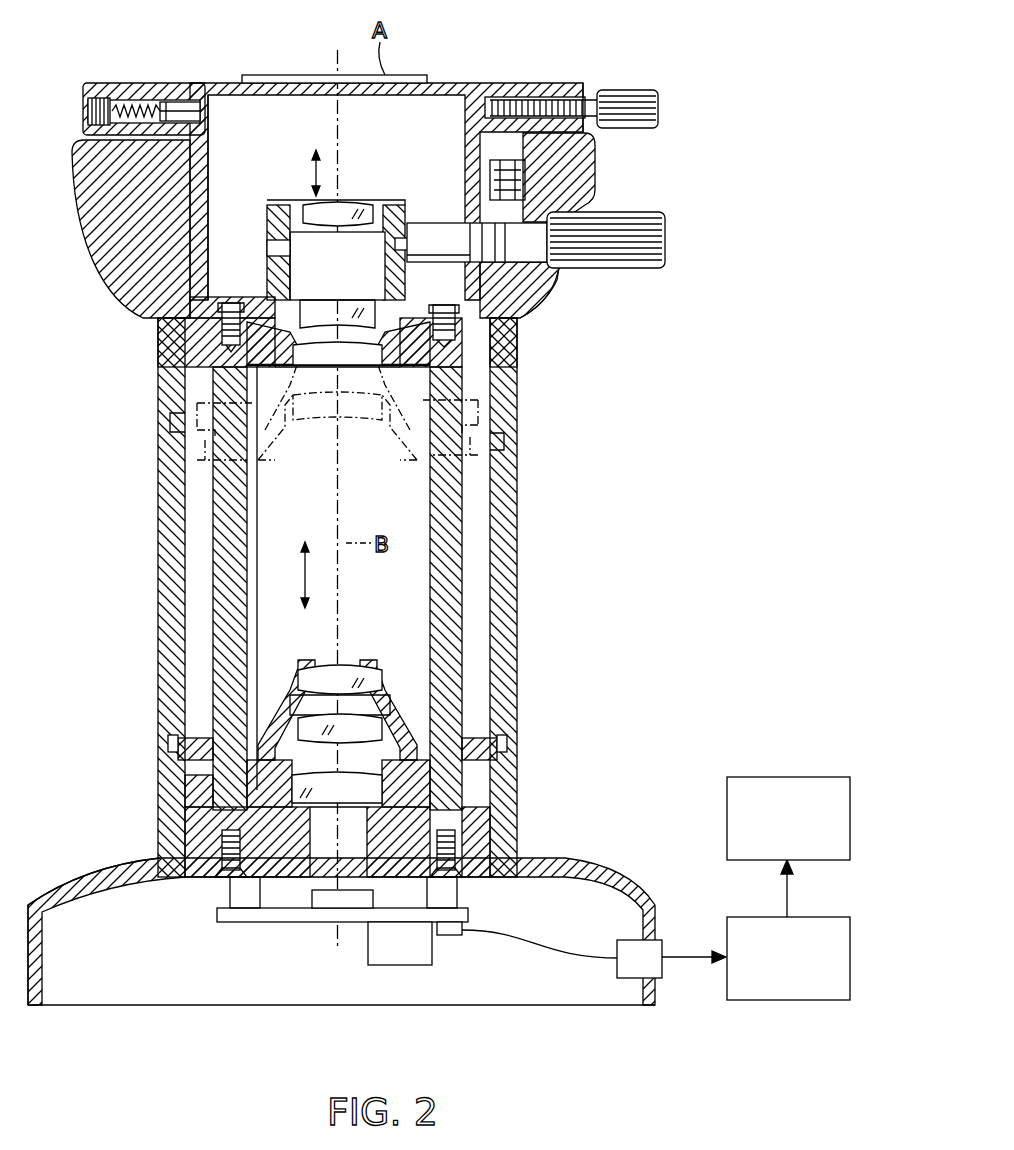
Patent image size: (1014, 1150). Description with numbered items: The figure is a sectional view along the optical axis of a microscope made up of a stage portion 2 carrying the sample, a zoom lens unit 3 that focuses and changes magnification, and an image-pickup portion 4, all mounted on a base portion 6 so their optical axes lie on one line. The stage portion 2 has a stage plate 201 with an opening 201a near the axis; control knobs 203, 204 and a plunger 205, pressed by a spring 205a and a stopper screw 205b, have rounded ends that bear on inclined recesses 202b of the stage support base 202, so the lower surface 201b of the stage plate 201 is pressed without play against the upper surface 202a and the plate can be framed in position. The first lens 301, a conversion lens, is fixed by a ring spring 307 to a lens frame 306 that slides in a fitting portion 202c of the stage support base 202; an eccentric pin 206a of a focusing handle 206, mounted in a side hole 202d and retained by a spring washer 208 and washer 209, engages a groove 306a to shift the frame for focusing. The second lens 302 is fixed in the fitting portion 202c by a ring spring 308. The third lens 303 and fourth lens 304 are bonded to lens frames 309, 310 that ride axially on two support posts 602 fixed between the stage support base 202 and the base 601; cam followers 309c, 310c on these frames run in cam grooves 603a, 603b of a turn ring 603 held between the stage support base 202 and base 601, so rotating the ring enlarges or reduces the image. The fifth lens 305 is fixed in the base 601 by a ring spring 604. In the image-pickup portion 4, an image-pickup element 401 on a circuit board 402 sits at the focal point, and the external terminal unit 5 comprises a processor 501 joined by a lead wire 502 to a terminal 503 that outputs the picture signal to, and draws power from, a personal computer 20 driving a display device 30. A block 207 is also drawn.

The stage portion 2 is at (506, 82).
The stage plate 201 is at (565, 83).
The opening 201a is at (292, 95).
The lower surface 201b is at (235, 95).
The stage support base 202 is at (80, 160).
The upper surface 202a is at (198, 92).
The recesses 202b is at (473, 92).
The fitting portion 202c is at (182, 300).
The side hole 202d is at (520, 272).
The control knob 203 is at (628, 95).
The control knob 204 is at (627, 109).
The plunger 205 is at (168, 104).
The spring 205a is at (128, 105).
The stopper screw 205b is at (93, 100).
The focusing handle 206 is at (662, 228).
The eccentric pin 206a is at (401, 236).
The fixing block 207 is at (578, 196).
The spring washer 208 is at (522, 292).
The washer 209 is at (542, 278).
The zoom lens unit 3 is at (258, 558).
The first lens 301 is at (353, 205).
The second lens 302 is at (258, 358).
The third lens 303 is at (310, 672).
The fourth lens 304 is at (360, 720).
The fifth lens 305 is at (302, 788).
The lens frame 306 is at (268, 246).
The groove 306a is at (272, 262).
The ring spring 307 is at (290, 212).
The ring spring 308 is at (160, 322).
The lens frame 309 is at (270, 702).
The cam follower 309c is at (176, 724).
The lens frame 310 is at (432, 736).
The cam follower 310c is at (505, 750).
The image-pickup portion 4 is at (198, 944).
The image-pickup element 401 is at (325, 908).
The circuit board 402 is at (236, 922).
The external terminal unit 5 is at (678, 946).
The processor 501 is at (420, 951).
The lead wire 502 is at (560, 957).
The terminal 503 is at (626, 969).
The base portion 6 is at (607, 870).
The base 601 is at (52, 892).
The support posts 602 is at (228, 482).
The turn ring 603 is at (166, 515).
The cam groove 603a is at (168, 740).
The cam groove 603b is at (506, 770).
The ring spring 604 is at (466, 796).
The personal computer 20 is at (820, 917).
The display device 30 is at (777, 777).